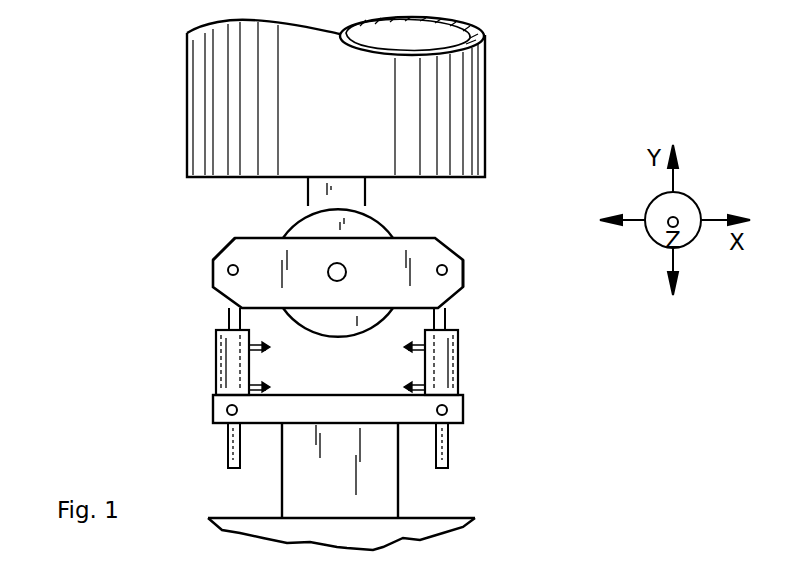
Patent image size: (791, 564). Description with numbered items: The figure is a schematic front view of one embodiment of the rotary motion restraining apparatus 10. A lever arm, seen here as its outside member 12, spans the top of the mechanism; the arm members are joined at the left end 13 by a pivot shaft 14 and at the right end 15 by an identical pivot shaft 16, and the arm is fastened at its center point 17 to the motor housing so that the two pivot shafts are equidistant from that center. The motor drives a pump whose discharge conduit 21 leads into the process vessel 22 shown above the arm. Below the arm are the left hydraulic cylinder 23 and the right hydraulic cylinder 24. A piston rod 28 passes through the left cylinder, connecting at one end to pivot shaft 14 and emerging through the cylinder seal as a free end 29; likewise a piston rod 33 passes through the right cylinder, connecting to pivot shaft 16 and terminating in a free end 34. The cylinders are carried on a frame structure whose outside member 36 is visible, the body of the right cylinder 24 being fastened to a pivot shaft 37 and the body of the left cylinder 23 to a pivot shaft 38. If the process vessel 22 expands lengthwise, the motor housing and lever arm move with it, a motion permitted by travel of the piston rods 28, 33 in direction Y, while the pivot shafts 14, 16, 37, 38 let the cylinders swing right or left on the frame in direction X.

The rotary motion restraining apparatus 10 is at (95, 272).
The outside member 12 is at (247, 238).
The left end 13 is at (213, 262).
The pivot shaft 14 is at (228, 270).
The right end 15 is at (463, 275).
The pivot shaft 16 is at (447, 267).
The center point 17 is at (347, 271).
The discharge conduit 21 is at (365, 190).
The process vessel 22 is at (487, 100).
The left hydraulic cylinder 23 is at (217, 365).
The right hydraulic cylinder 24 is at (458, 368).
The piston rod 28 is at (230, 314).
The free end 29 is at (227, 440).
The piston rod 33 is at (445, 320).
The free end 34 is at (448, 446).
The outside member 36 is at (282, 486).
The pivot shaft 37 is at (447, 406).
The pivot shaft 38 is at (227, 409).